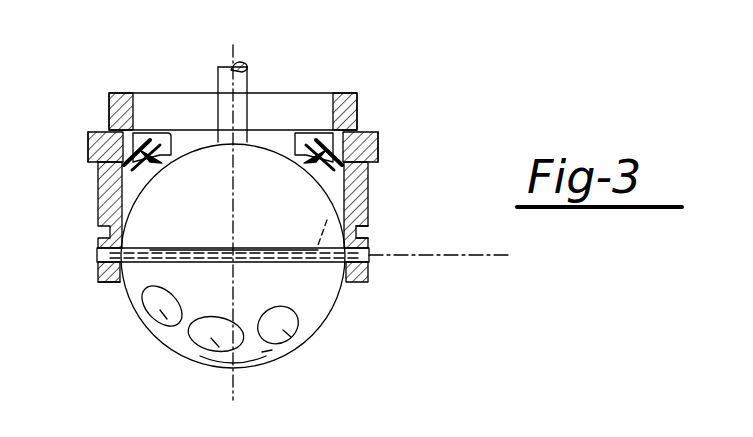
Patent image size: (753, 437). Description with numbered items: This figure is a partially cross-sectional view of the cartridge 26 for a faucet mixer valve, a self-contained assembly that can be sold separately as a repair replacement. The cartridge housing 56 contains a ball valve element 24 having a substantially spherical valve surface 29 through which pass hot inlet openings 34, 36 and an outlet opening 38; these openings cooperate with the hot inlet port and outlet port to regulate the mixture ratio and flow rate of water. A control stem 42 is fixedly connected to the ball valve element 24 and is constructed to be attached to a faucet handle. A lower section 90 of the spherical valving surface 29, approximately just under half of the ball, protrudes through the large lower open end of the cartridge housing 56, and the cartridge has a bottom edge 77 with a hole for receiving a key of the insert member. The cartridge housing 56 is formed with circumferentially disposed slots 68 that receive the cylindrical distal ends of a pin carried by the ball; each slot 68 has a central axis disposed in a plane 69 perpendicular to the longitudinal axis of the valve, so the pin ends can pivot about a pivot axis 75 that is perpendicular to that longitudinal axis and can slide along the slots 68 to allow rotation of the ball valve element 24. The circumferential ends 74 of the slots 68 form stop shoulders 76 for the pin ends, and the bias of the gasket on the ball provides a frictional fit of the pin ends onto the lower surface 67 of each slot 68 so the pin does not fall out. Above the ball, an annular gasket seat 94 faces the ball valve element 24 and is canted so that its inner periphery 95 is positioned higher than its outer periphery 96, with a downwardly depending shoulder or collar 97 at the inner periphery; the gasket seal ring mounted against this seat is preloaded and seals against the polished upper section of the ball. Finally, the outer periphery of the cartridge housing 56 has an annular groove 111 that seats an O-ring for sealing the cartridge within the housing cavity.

The ball valve element 24 is at (328, 319).
The cartridge 26 is at (330, 72).
The spherical valve surface 29 is at (246, 366).
The hot inlet opening 34 is at (199, 348).
The hot inlet opening 36 is at (290, 343).
The outlet opening 38 is at (158, 312).
The control stem 42 is at (243, 65).
The cartridge housing 56 is at (357, 182).
The lower surface of slot 67 is at (100, 268).
The slot 68 is at (97, 255).
The plane 69 is at (370, 191).
The circumferential end of slot 74 is at (179, 186).
The pivot axis 75 is at (479, 257).
The stop shoulder 76 is at (168, 250).
The bottom edge 77 is at (107, 283).
The lower section of spherical valving surface 90 is at (268, 352).
The annular gasket seat 94 is at (157, 147).
The inner periphery of gasket seat 95 is at (153, 152).
The outer periphery of gasket seat 96 is at (110, 130).
The downwardly depending collar 97 is at (347, 160).
The annular groove 111 is at (360, 235).